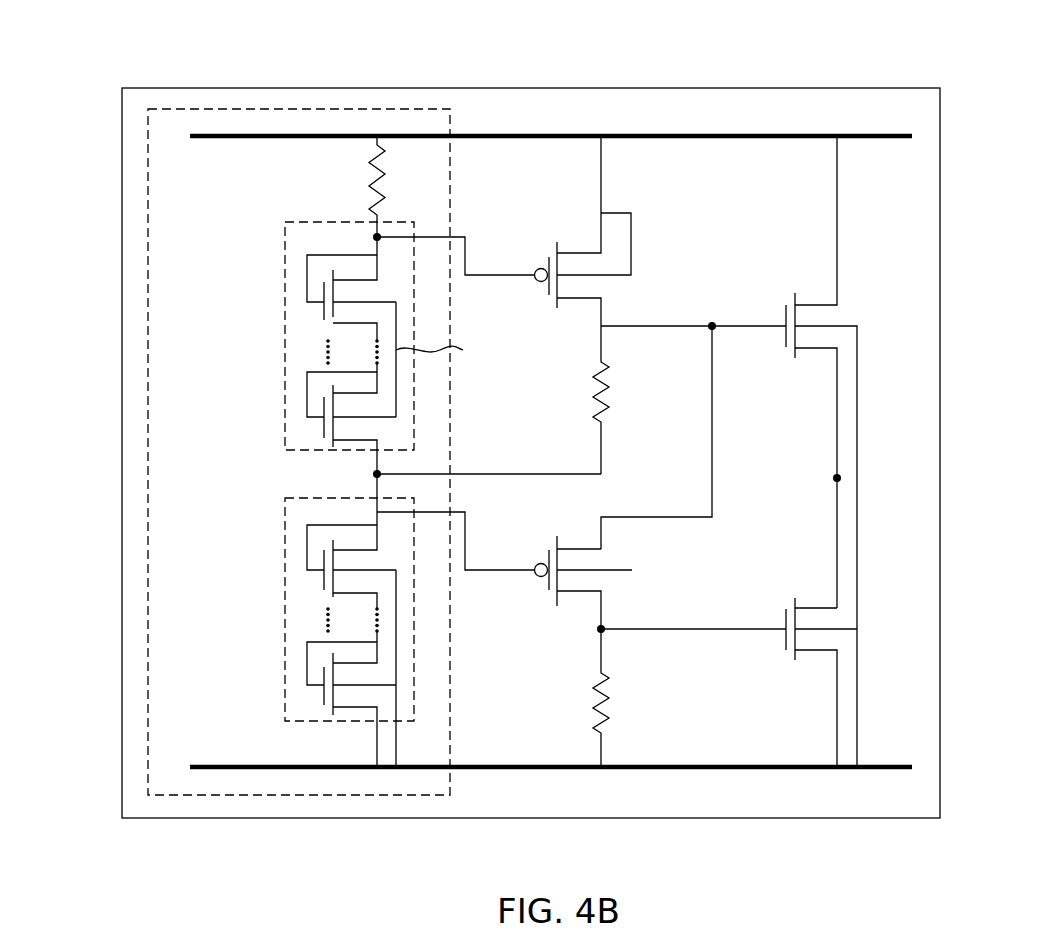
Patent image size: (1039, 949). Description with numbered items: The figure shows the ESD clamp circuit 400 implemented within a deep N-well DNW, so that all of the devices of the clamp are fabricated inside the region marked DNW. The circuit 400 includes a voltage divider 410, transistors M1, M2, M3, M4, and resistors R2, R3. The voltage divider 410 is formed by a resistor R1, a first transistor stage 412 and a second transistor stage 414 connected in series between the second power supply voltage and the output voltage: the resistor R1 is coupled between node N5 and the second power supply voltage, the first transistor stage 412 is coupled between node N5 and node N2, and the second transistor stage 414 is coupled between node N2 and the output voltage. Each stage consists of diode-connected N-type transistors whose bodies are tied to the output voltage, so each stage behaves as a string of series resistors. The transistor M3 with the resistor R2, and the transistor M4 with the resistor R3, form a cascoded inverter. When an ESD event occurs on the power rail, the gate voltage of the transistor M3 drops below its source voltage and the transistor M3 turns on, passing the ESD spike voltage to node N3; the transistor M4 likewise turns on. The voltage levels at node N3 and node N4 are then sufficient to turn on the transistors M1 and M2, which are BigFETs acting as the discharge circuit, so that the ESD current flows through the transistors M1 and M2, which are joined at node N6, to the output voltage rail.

The ESD clamp circuit 400 is at (182, 27).
The voltage divider 410 is at (148, 297).
The first transistor stage 412 is at (285, 277).
The second transistor stage 414 is at (285, 522).
The deep N-well DNW is at (122, 183).
The resistor R1 is at (358, 186).
The resistor R2 is at (621, 400).
The resistor R3 is at (620, 698).
The transistor M1 is at (818, 451).
The transistor M2 is at (817, 666).
The transistor M3 is at (583, 231).
The transistor M4 is at (628, 565).
The node N2 is at (466, 516).
The node N3 is at (693, 421).
The node N4 is at (671, 635).
The node N5 is at (433, 250).
The node N6 is at (818, 536).